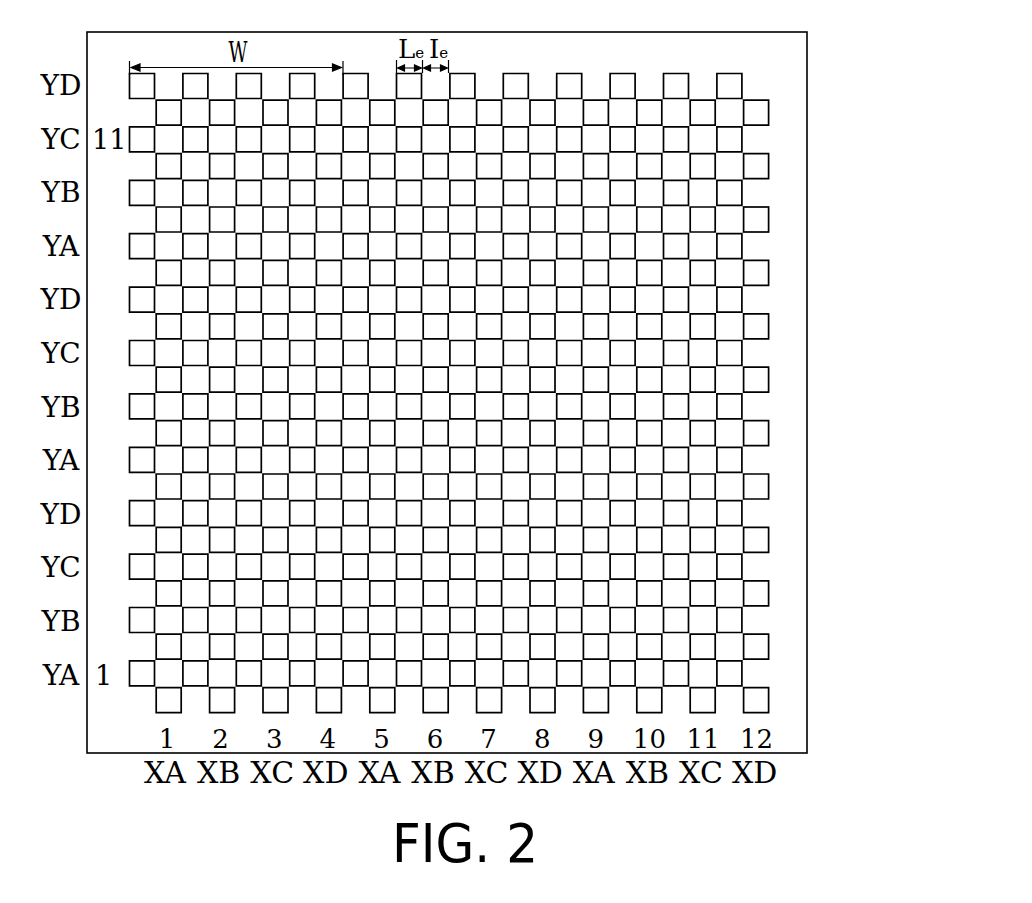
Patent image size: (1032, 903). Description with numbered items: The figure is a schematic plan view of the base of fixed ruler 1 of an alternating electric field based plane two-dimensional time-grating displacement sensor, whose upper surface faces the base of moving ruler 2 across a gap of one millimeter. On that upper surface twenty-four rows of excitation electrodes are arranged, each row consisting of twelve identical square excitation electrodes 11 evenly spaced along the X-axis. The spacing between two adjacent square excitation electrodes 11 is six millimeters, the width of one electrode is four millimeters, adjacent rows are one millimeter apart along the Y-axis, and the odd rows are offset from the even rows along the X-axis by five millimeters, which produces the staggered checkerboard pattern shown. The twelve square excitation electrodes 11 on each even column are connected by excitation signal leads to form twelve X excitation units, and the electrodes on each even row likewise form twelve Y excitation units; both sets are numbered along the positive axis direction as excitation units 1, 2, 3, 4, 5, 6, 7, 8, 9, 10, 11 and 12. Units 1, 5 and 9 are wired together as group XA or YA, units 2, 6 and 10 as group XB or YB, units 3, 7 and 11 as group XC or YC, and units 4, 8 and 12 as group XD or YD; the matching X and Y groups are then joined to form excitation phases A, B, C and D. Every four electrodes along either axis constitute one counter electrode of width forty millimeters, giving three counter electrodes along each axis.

The base of fixed ruler 1 is at (807, 272).
The square excitation electrode 11 is at (755, 218).
The twelfth excitation unit 12 is at (430, 97).
The tenth excitation unit 10 is at (417, 204).
The ninth excitation unit 9 is at (432, 258).
The eighth excitation unit 8 is at (432, 311).
The seventh excitation unit 7 is at (432, 365).
The sixth excitation unit 6 is at (432, 419).
The fifth excitation unit 5 is at (432, 472).
The fourth excitation unit 4 is at (432, 526).
The third excitation unit 3 is at (432, 578).
The base of moving ruler 2 is at (432, 632).